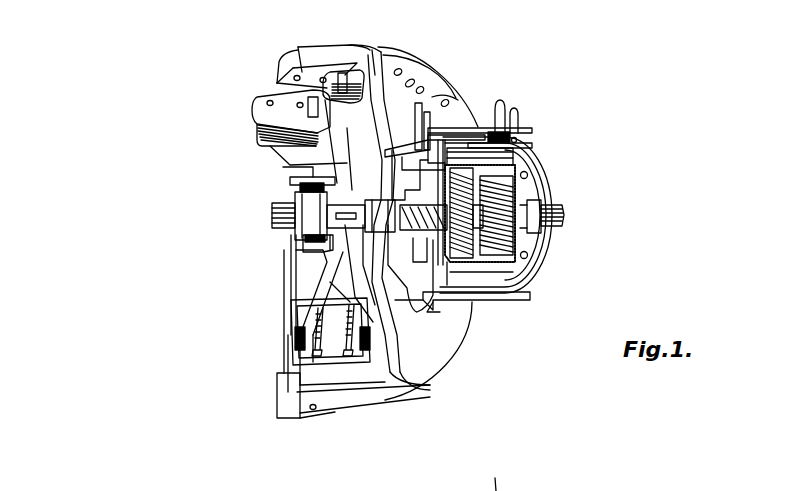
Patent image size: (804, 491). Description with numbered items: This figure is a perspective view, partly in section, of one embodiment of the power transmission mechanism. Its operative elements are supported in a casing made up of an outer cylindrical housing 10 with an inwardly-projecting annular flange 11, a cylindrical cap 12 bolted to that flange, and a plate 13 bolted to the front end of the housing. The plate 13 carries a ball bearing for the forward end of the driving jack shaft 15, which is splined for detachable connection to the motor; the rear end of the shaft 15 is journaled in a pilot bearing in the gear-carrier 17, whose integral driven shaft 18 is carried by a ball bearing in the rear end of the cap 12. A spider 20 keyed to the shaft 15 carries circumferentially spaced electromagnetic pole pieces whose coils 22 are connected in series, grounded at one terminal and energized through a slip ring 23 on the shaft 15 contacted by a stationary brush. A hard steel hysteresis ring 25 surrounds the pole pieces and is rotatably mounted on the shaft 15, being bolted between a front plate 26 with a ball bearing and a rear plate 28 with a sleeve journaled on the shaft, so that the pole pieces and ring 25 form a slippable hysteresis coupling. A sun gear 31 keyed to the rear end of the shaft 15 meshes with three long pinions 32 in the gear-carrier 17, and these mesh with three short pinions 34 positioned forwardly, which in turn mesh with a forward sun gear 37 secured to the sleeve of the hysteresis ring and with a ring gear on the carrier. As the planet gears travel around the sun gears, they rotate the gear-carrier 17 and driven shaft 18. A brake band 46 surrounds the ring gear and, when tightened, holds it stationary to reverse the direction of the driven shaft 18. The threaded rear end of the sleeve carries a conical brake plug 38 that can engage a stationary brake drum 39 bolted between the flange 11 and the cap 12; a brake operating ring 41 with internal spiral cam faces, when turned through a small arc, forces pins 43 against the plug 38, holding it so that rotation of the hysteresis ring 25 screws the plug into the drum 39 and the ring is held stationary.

The outer cylindrical housing 10 is at (348, 403).
The annular flange 11 is at (440, 357).
The cylindrical cap 12 is at (483, 302).
The plate 13 is at (293, 273).
The driving jack shaft 15 is at (276, 230).
The gear-carrier 17 is at (528, 185).
The driven shaft 18 is at (557, 230).
The spider 20 is at (318, 300).
The coils 22 is at (293, 345).
The slip ring 23 is at (297, 178).
The hysteresis ring 25 is at (316, 60).
The front plate 26 is at (288, 64).
The rear plate 28 is at (418, 75).
The sun gear 31 is at (520, 195).
The long pinions 32 is at (462, 220).
The short pinions 34 is at (527, 165).
The forward sun gear 37 is at (465, 222).
The conical brake plug 38 is at (482, 130).
The stationary brake drum 39 is at (417, 140).
The brake operating ring 41 is at (428, 117).
The pins 43 is at (447, 127).
The brake band 46 is at (513, 133).